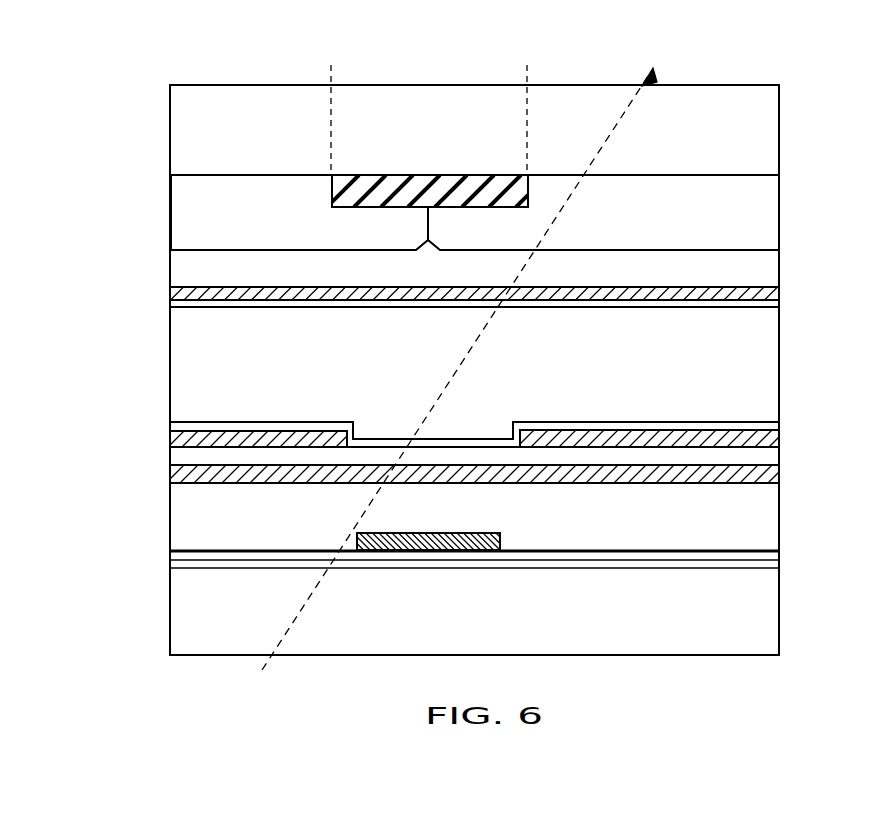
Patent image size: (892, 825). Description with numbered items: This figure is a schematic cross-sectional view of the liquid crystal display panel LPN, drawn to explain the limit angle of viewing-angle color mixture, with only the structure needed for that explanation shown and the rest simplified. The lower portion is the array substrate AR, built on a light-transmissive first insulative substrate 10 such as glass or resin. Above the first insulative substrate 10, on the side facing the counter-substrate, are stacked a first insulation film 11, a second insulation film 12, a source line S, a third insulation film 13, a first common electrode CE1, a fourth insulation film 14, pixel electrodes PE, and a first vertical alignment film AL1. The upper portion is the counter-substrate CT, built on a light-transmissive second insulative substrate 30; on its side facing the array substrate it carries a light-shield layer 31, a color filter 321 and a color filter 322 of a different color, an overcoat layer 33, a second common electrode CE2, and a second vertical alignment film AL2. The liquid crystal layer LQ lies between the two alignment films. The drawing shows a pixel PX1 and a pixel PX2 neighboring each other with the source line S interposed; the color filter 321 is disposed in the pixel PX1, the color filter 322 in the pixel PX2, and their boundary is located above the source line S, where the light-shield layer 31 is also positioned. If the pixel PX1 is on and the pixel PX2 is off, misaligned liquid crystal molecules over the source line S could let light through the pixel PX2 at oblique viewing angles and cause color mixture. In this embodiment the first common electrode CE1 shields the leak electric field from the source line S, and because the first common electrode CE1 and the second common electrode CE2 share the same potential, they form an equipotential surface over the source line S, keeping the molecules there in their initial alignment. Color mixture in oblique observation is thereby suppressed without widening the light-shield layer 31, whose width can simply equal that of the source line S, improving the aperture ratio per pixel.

The liquid crystal display panel LPN is at (804, 102).
The second insulative substrate 30 is at (773, 139).
The color filter 322 is at (773, 218).
The color filter 321 is at (178, 214).
The light-shield layer 31 is at (332, 194).
The overcoat layer 33 is at (773, 269).
The second common electrode CE2 is at (773, 293).
The second vertical alignment film AL2 is at (766, 308).
The liquid crystal layer LQ is at (773, 359).
The first vertical alignment film AL1 is at (764, 423).
The pixel electrode PE is at (260, 430).
The fourth insulation film 14 is at (773, 457).
The first common electrode CE1 is at (768, 474).
The third insulation film 13 is at (773, 518).
The source line S is at (447, 532).
The second insulation film 12 is at (770, 553).
The first insulation film 11 is at (770, 564).
The first insulative substrate 10 is at (773, 619).
The counter-substrate CT is at (108, 85).
The array substrate AR is at (154, 432).
The pixel PX1 is at (331, 72).
The pixel PX2 is at (779, 72).